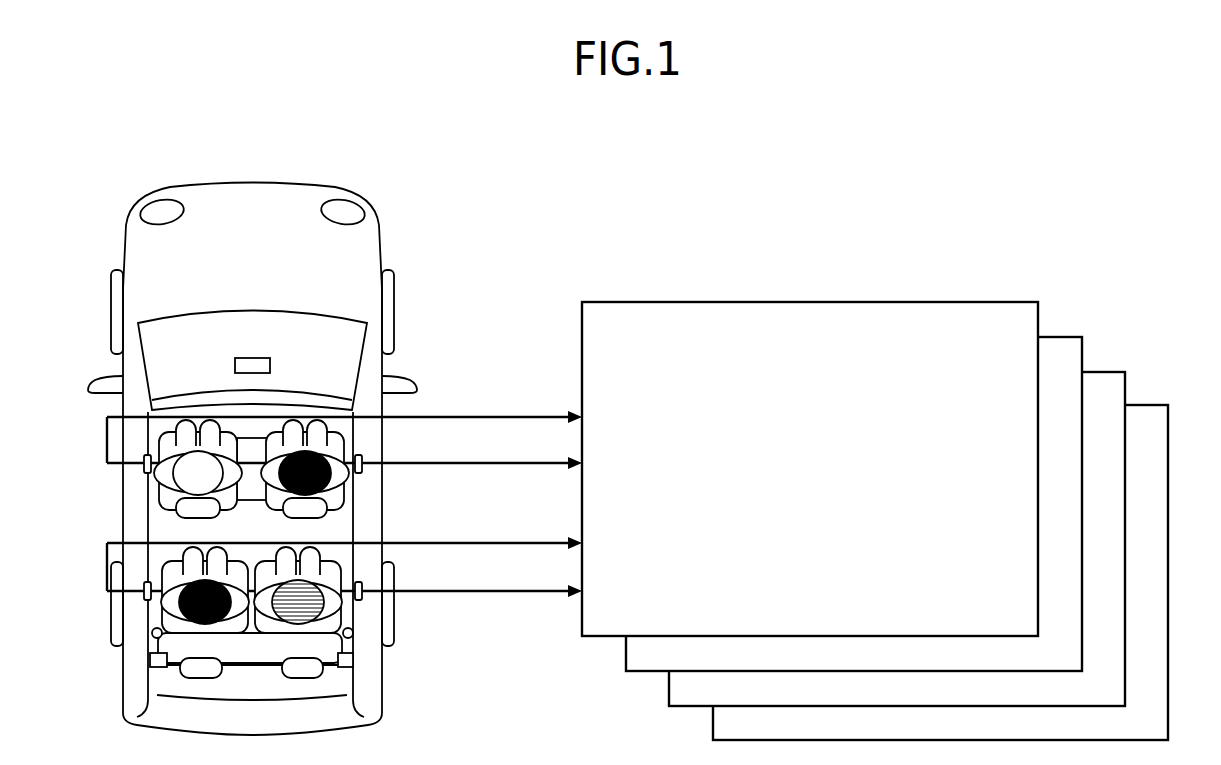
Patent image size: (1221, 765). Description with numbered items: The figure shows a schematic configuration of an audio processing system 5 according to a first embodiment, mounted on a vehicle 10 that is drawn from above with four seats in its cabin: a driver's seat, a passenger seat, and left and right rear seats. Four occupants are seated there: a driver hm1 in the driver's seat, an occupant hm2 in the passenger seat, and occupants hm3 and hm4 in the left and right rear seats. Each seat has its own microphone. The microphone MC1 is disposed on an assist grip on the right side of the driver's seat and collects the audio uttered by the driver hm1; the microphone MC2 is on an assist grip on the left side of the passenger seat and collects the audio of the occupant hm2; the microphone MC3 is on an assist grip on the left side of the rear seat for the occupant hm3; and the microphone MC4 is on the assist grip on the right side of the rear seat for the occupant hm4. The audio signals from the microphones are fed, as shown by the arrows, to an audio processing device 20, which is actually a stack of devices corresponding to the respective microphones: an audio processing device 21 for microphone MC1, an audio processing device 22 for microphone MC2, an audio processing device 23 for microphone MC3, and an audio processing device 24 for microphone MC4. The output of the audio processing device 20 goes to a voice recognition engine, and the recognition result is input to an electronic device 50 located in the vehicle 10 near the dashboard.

The audio processing system 5 is at (496, 166).
The vehicle 10 is at (382, 248).
The electronic device 50 is at (253, 358).
The audio processing device 20 is at (898, 486).
The audio processing device 21 is at (982, 302).
The audio processing device 22 is at (1052, 337).
The audio processing device 23 is at (1100, 372).
The audio processing device 24 is at (1157, 405).
The microphone MC1 is at (362, 462).
The microphone MC2 is at (143, 460).
The microphone MC3 is at (143, 588).
The microphone MC4 is at (362, 588).
The driver hm1 is at (347, 482).
The occupant hm2 is at (157, 482).
The occupant hm3 is at (177, 612).
The occupant hm4 is at (330, 612).